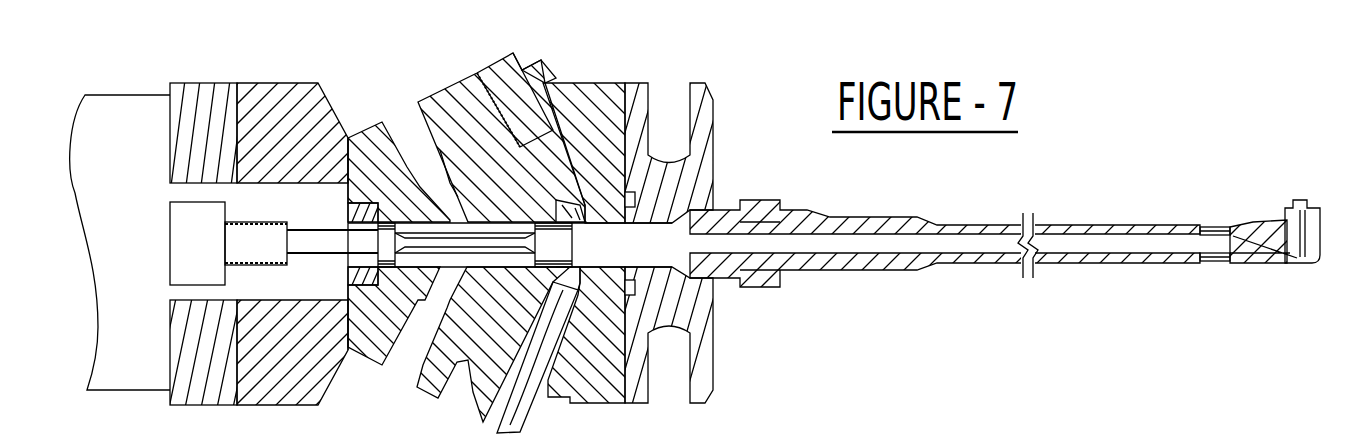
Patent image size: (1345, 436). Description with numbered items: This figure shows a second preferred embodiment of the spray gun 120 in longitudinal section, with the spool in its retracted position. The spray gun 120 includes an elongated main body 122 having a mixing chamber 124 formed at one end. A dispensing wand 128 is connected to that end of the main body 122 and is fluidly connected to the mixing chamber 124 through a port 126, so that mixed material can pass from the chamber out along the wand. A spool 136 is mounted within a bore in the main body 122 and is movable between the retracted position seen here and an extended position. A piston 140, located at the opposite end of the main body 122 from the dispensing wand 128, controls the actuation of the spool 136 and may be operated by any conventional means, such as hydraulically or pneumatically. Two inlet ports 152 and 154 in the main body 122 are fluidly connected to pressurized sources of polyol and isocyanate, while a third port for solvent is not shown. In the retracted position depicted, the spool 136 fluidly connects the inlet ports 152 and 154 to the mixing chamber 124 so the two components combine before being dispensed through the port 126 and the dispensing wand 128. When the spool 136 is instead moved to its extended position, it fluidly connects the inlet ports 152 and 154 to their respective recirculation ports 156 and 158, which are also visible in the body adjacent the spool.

The spray gun 120 is at (600, 58).
The main body 122 is at (473, 142).
The mixing chamber 124 is at (672, 253).
The port 126 is at (732, 257).
The dispensing wand 128 is at (1139, 232).
The spool 136 is at (485, 223).
The piston 140 is at (182, 241).
The inlet port 152 is at (578, 214).
The inlet port 154 is at (583, 270).
The recirculation port 156 is at (447, 193).
The recirculation port 158 is at (447, 300).